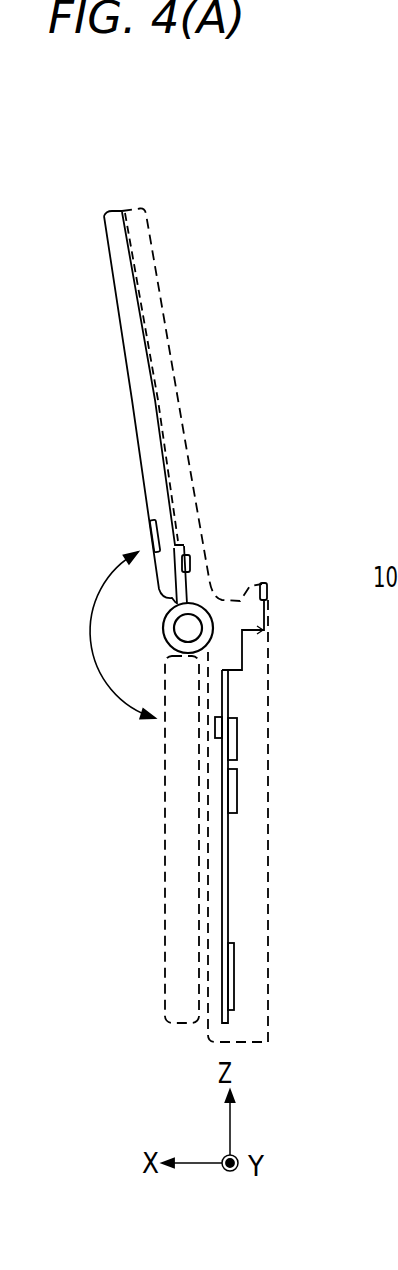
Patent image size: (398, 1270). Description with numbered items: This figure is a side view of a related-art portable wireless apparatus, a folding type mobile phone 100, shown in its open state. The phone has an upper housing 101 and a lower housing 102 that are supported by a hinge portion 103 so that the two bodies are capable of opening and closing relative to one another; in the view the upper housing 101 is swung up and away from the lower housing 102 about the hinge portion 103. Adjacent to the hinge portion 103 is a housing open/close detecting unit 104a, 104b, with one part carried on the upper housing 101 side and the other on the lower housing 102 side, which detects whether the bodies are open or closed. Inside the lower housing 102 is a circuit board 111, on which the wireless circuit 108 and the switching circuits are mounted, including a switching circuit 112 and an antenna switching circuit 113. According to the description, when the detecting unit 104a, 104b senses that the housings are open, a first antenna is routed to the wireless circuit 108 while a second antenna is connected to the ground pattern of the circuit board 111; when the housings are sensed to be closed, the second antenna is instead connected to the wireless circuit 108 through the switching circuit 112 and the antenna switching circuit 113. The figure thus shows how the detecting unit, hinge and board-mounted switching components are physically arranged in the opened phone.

The folding type mobile phone 100 is at (110, 422).
The upper housing 101 is at (158, 290).
The lower housing 102 is at (268, 906).
The hinge portion 103 is at (148, 648).
The housing open/close detecting unit 104a is at (110, 514).
The housing open/close detecting unit 104b is at (215, 735).
The wireless circuit 108 is at (234, 974).
The circuit board 111 is at (220, 1016).
The switching circuit 112 is at (238, 742).
The antenna switching circuit 113 is at (237, 792).